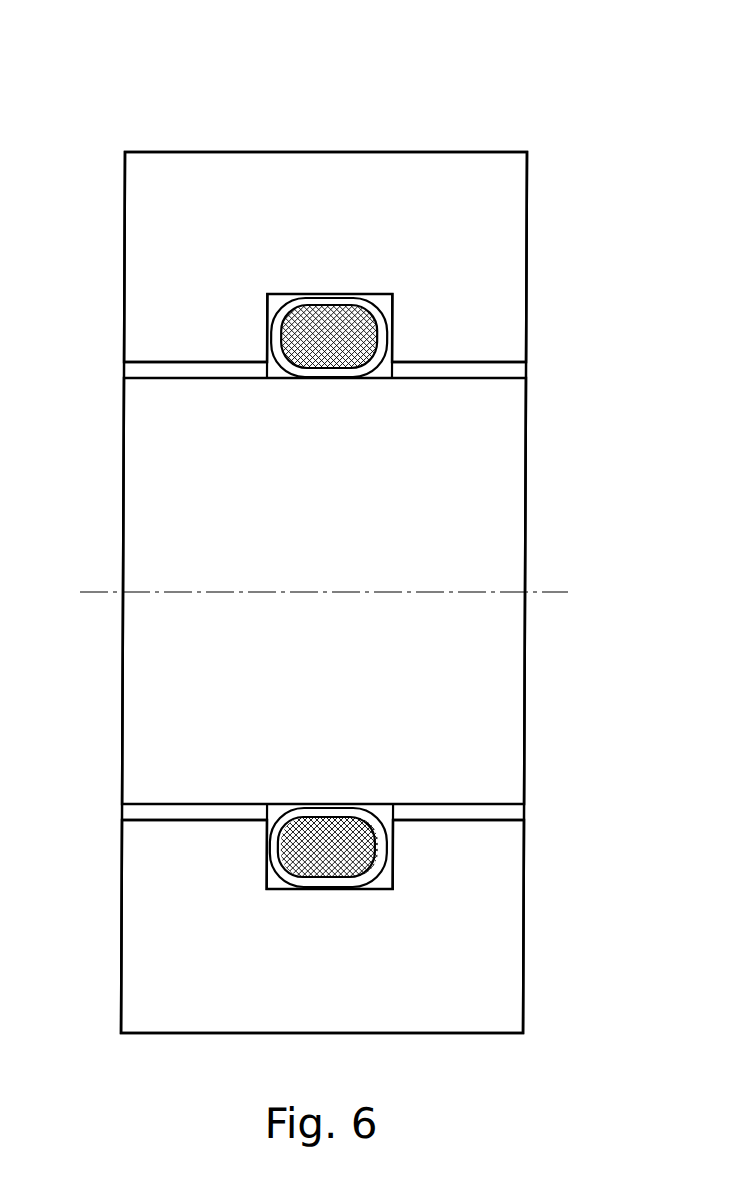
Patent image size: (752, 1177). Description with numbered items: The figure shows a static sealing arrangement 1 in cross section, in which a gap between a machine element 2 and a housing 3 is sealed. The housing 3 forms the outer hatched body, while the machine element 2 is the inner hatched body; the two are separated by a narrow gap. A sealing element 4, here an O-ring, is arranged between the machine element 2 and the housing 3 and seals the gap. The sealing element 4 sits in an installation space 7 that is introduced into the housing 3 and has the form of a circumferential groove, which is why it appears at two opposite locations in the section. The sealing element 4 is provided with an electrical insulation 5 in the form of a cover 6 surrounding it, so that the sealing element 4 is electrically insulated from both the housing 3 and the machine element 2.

The sealing arrangement 1 is at (462, 96).
The machine element 2 is at (488, 462).
The housing 3 is at (508, 213).
The sealing element 4 is at (328, 307).
The electrical insulation 5 is at (338, 300).
The cover 6 is at (274, 321).
The installation space 7 is at (397, 323).